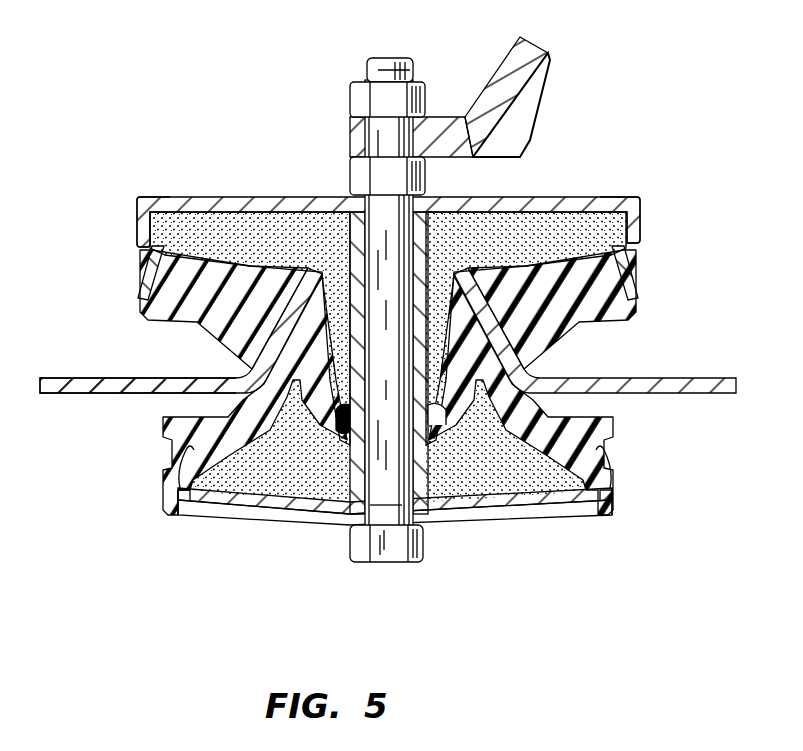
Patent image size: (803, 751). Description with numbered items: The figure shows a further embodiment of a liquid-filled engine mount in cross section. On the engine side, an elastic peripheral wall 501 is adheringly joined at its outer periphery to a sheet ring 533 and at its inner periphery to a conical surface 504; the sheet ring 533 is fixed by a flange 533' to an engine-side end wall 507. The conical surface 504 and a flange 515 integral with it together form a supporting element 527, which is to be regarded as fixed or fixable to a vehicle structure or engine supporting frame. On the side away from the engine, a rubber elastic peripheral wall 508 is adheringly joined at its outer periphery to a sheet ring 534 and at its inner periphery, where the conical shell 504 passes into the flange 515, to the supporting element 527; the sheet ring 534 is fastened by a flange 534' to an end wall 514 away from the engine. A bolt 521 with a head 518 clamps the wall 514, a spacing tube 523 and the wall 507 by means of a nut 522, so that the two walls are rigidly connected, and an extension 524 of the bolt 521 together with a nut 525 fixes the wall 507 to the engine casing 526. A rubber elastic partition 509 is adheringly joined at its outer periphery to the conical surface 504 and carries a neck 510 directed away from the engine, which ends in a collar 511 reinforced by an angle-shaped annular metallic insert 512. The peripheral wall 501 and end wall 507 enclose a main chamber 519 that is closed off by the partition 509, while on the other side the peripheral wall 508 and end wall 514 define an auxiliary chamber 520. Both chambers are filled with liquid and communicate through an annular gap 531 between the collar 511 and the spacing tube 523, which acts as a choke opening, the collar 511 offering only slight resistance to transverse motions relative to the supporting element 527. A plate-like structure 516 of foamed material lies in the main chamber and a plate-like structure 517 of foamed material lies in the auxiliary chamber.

The elastic peripheral wall 501 is at (608, 276).
The conical surface 504 is at (287, 268).
The end wall 507 is at (518, 213).
The rubber elastic peripheral wall 508 is at (586, 448).
The rubber elastic partition 509 is at (292, 346).
The neck 510 is at (447, 395).
The collar 511 is at (433, 412).
The angle-shaped annular metallic insert 512 is at (438, 446).
The end wall 514 is at (470, 525).
The flange 515 is at (118, 394).
The plate-like structure 516 is at (573, 210).
The plate-like structure 517 is at (548, 517).
The head 518 is at (383, 562).
The main chamber 519 is at (527, 252).
The auxiliary chamber 520 is at (267, 490).
The bolt 521 is at (392, 491).
The nut 522 is at (362, 177).
The spacing tube 523 is at (348, 262).
The extension 524 is at (366, 62).
The nut 525 is at (362, 105).
The engine casing 526 is at (503, 73).
The supporting element 527 is at (598, 382).
The annular gap 531 is at (348, 426).
The sheet ring 533 is at (128, 273).
The flange 533' is at (135, 206).
The sheet ring 534 is at (217, 395).
The flange 534' is at (189, 503).